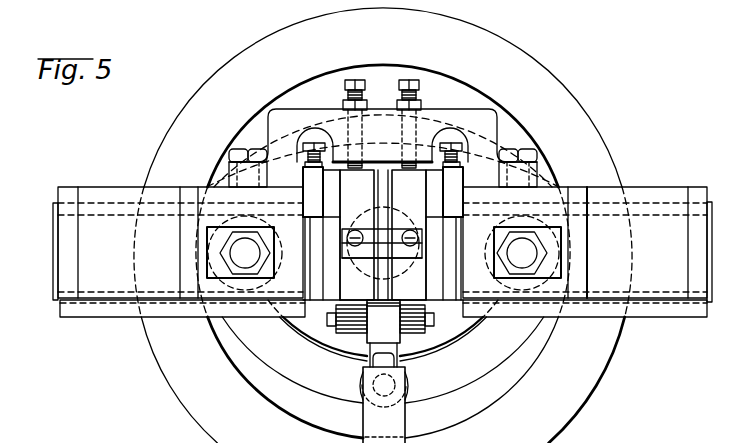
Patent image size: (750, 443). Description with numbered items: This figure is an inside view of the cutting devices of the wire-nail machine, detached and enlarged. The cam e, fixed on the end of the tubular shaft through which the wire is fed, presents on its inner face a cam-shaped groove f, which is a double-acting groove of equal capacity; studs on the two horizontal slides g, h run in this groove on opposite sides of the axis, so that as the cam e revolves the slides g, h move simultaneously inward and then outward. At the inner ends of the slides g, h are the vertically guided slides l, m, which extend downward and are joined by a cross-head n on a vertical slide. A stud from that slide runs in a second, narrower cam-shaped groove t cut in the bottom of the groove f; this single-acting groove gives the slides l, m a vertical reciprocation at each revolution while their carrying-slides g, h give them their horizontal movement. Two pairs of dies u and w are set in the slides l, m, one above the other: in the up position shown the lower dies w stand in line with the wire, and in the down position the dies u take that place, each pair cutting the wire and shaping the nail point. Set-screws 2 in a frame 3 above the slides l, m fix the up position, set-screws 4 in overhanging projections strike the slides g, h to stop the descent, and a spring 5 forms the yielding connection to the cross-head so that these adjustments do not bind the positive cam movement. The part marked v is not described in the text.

The set-screw 2 is at (387, 124).
The frame 3 is at (409, 128).
The set-screw 4 is at (387, 155).
The spring 5 is at (383, 333).
The cam e is at (383, 225).
The cam-shaped groove f is at (383, 251).
The horizontal slide g is at (170, 252).
The horizontal slide h is at (595, 252).
The vertical slide l is at (348, 235).
The vertical slide m is at (417, 235).
The cross-head n is at (386, 319).
The cam-shaped groove t is at (383, 331).
The dies u is at (382, 243).
The arm v is at (384, 395).
The dies w is at (382, 251).